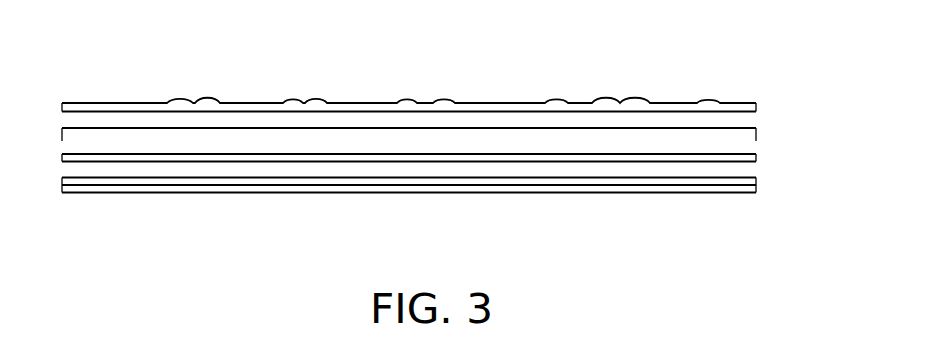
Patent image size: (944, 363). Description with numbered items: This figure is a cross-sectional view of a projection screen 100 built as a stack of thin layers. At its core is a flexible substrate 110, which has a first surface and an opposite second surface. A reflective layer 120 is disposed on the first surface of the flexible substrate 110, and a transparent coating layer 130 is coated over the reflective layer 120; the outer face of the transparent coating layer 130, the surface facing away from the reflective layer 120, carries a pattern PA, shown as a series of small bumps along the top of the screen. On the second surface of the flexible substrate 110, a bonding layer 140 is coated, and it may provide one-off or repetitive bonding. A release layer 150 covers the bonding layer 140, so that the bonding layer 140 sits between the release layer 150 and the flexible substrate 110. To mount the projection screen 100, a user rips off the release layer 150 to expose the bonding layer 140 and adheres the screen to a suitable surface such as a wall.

The projection screen 100 is at (446, 153).
The flexible substrate 110 is at (750, 141).
The reflective layer 120 is at (750, 122).
The transparent coating layer 130 is at (446, 87).
The bonding layer 140 is at (750, 160).
The release layer 150 is at (750, 171).
The pattern PA is at (452, 96).